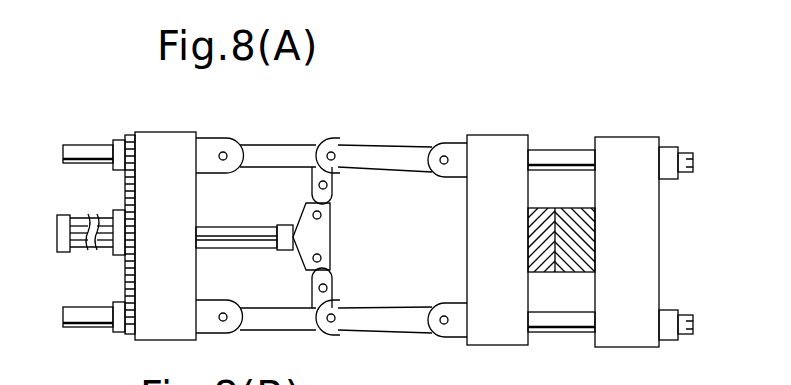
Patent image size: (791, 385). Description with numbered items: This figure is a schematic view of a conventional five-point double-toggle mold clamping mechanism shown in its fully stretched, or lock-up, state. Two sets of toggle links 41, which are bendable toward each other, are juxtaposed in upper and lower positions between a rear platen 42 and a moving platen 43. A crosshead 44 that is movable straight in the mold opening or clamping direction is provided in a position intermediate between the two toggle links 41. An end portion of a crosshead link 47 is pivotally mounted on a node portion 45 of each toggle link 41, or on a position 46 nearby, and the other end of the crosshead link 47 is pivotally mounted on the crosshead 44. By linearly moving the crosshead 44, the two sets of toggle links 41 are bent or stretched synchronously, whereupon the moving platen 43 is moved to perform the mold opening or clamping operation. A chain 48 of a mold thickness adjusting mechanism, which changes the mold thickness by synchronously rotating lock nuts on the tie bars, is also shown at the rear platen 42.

The toggle links 41 is at (275, 145).
The rear platen 42 is at (153, 131).
The moving platen 43 is at (488, 134).
The crosshead 44 is at (323, 237).
The node portion 45 is at (333, 154).
The position nearby the node portion 46 is at (310, 184).
The crosshead link 47 is at (310, 198).
The chain 48 is at (125, 272).